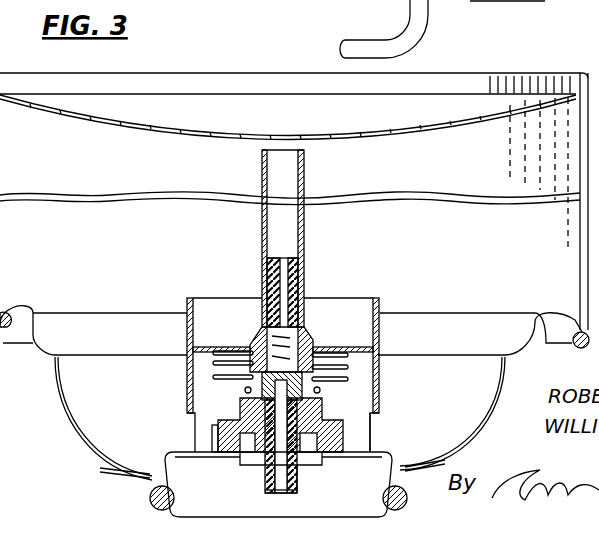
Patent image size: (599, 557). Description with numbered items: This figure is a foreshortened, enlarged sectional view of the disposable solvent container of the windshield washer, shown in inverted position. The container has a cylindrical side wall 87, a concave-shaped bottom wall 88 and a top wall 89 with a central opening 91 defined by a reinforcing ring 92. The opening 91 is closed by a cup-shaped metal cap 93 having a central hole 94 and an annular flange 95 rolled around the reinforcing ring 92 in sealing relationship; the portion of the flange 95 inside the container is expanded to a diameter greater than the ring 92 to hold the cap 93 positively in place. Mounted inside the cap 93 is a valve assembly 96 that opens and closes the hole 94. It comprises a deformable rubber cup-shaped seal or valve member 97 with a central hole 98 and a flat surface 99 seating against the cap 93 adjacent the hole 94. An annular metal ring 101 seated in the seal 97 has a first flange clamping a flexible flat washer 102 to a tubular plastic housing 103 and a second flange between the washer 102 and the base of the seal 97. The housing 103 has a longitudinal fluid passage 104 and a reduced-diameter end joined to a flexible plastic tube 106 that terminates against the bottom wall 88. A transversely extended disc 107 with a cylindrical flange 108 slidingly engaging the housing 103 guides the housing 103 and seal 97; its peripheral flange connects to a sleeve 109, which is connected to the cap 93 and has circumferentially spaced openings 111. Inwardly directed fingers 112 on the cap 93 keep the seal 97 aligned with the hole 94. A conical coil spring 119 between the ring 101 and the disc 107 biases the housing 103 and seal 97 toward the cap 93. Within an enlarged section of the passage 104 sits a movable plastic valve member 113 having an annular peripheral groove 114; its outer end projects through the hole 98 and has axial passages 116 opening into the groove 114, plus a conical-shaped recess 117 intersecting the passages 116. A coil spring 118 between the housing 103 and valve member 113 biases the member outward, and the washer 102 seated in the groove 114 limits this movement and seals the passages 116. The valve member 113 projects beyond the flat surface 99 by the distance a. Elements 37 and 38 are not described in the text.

The tub top portion 37 is at (558, 0).
The water inlet pipe 38 is at (358, 41).
The cylindrical side wall 87 is at (0, 258).
The concave-shaped bottom wall 88 is at (422, 134).
The top wall 89 is at (76, 430).
The central opening 91 is at (172, 502).
The reinforcing ring 92 is at (150, 487).
The cup-shaped metal cap 93 is at (188, 455).
The central hole 94 is at (263, 455).
The annular flange 95 is at (388, 513).
The valve assembly 96 is at (347, 287).
The cup-shaped seal or valve member 97 is at (380, 398).
The central hole 98 is at (300, 470).
The flat surface 99 is at (305, 455).
The annular metal ring 101 is at (380, 385).
The flexible flat washer 102 is at (240, 414).
The tubular plastic housing 103 is at (308, 322).
The longitudinal fluid passage 104 is at (284, 258).
The flexible plastic tube 106 is at (262, 221).
The transversely extended disc 107 is at (330, 348).
The cylindrical flange 108 is at (248, 345).
The sleeve 109 is at (380, 372).
The openings 111 is at (378, 428).
The fingers 112 is at (212, 432).
The movable plastic valve member 113 is at (246, 400).
The annular peripheral groove 114 is at (267, 455).
The axial passages 116 is at (280, 493).
The conical-shaped recess 117 is at (295, 494).
The coil spring 118 is at (258, 322).
The coil spring 119 is at (213, 362).
The distance a is at (300, 478).